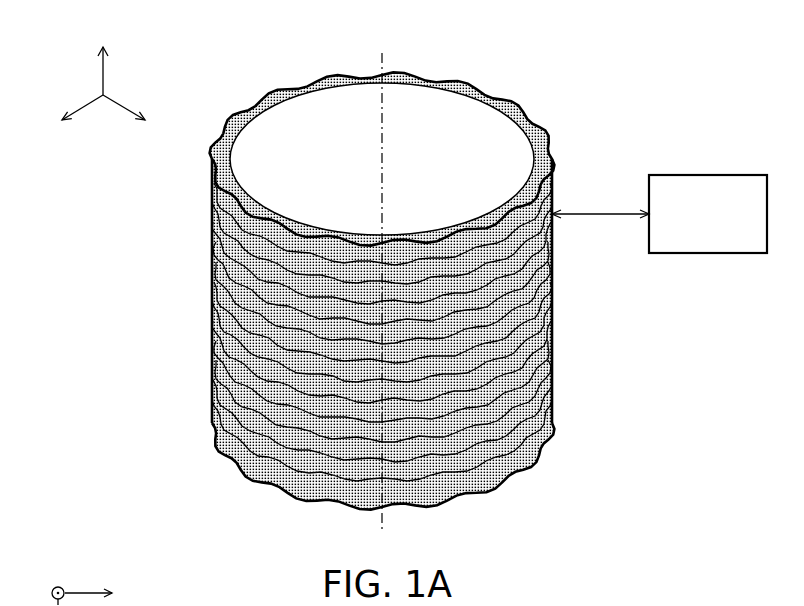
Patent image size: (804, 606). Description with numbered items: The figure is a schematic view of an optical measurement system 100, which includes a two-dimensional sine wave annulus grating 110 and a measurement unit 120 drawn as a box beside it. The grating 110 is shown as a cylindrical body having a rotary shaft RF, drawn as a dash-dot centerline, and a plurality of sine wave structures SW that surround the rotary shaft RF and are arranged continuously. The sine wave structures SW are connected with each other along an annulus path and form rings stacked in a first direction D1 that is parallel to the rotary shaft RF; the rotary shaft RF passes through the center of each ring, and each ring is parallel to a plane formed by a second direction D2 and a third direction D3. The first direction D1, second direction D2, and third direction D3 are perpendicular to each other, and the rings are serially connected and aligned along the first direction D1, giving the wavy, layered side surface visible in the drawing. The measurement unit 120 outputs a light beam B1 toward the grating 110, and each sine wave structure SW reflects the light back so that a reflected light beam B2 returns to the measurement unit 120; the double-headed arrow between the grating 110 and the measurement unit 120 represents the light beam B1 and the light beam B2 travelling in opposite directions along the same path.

The optical measurement system 100 is at (683, 503).
The two-dimensional sine wave annulus grating 110 is at (414, 277).
The measurement unit 120 is at (732, 227).
The sine wave structures SW is at (556, 338).
The rotary shaft RF is at (383, 277).
The light beam B1 is at (600, 188).
The light beam B2 is at (603, 212).
The first direction D1 is at (71, 311).
The second direction D2 is at (67, 116).
The third direction D3 is at (121, 350).